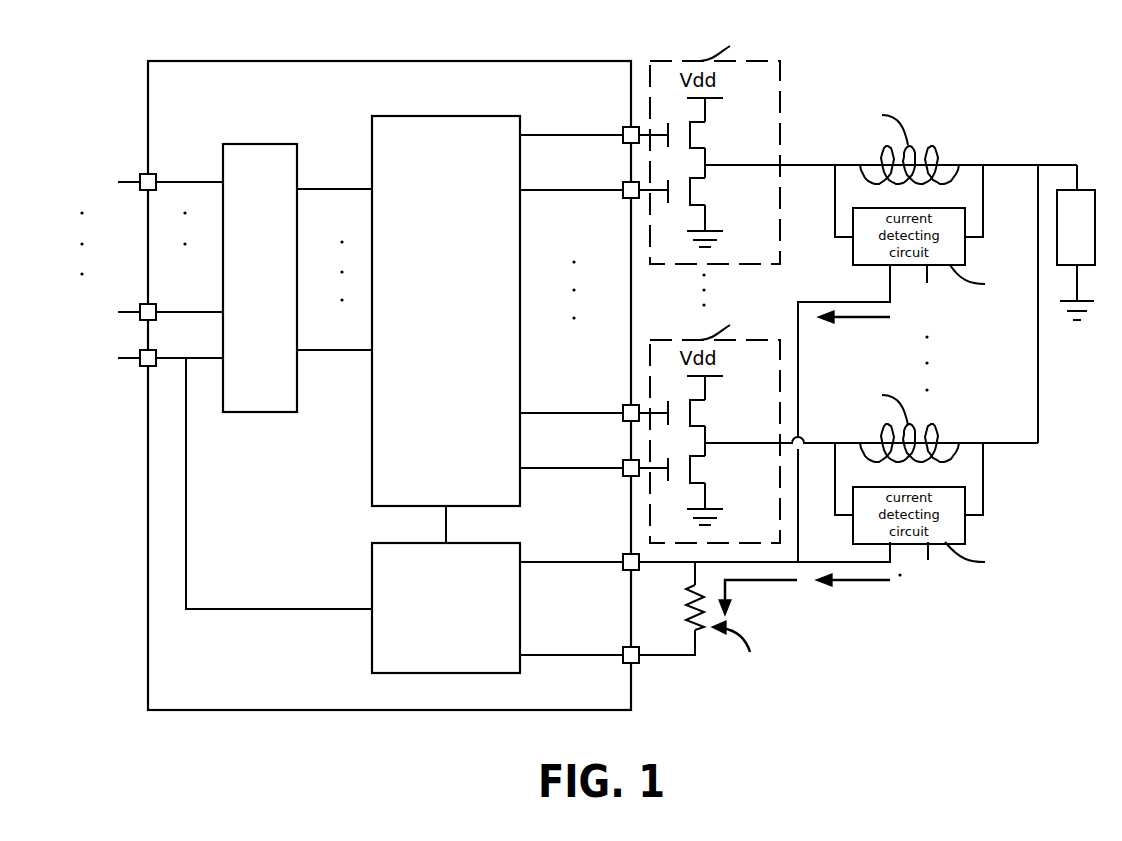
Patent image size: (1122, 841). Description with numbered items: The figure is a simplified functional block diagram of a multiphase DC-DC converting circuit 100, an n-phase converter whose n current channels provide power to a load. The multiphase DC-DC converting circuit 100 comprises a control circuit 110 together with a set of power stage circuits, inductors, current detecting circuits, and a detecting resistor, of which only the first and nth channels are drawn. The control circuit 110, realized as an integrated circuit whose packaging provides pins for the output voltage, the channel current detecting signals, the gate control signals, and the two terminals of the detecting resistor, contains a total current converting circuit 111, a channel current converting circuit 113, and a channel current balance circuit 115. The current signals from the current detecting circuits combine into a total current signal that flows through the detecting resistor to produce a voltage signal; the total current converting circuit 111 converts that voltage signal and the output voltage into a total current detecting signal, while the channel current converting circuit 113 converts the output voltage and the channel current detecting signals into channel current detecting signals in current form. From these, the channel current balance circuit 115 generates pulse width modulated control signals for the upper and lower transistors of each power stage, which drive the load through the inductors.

The multiphase DC-DC converting circuit 100 is at (1050, 656).
The control circuit 110 is at (148, 655).
The total current converting circuit 111 is at (372, 638).
The channel current converting circuit 113 is at (297, 412).
The channel current balance circuit 115 is at (372, 476).